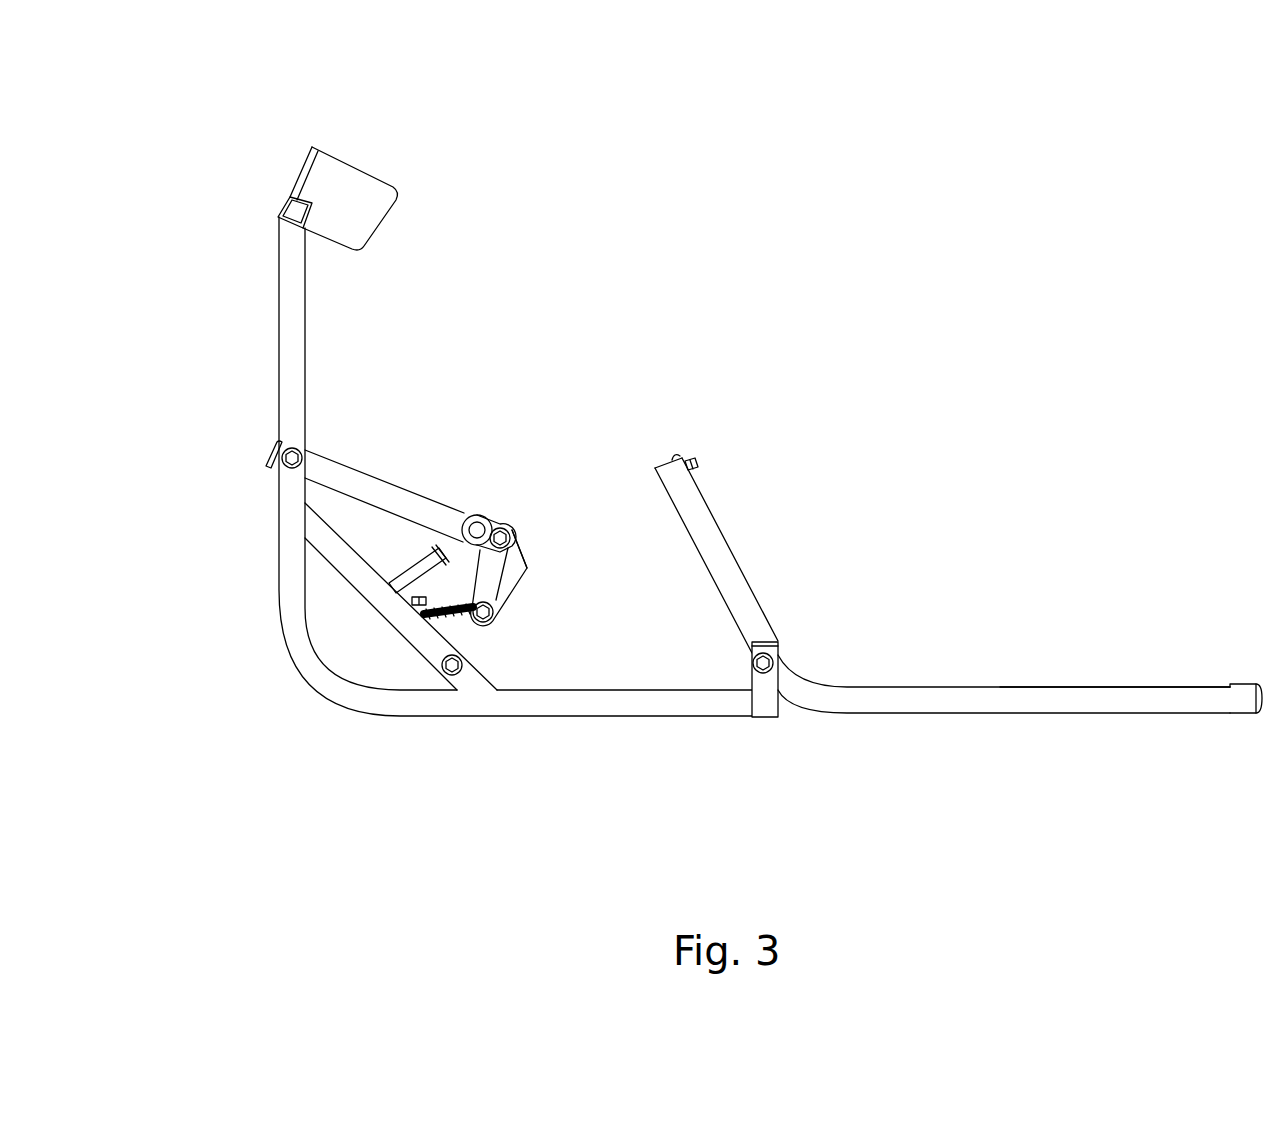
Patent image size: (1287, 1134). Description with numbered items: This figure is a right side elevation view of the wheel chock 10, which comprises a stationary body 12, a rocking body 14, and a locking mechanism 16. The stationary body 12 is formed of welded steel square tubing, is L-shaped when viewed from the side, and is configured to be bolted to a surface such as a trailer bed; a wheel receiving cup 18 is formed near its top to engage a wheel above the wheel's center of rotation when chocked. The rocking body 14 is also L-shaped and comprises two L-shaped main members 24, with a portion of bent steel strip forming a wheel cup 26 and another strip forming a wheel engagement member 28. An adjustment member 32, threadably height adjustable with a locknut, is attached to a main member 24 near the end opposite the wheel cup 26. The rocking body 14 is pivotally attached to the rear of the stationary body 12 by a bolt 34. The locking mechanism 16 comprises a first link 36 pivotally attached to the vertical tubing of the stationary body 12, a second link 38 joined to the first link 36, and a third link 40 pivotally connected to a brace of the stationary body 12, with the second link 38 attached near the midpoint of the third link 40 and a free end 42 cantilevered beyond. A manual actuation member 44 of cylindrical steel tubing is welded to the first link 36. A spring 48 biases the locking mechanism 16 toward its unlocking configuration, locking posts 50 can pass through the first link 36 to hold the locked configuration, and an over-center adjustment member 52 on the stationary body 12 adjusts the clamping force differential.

The wheel chock 10 is at (646, 172).
The stationary body 12 is at (295, 587).
The rocking body 14 is at (938, 695).
The locking mechanism 16 is at (332, 475).
The wheel receiving cup 18 is at (345, 178).
The main members 24 is at (1032, 697).
The wheel cup 26 is at (1242, 683).
The wheel engagement member 28 is at (677, 457).
The adjustment member 32 is at (697, 462).
The bolt 34 is at (758, 677).
The first link 36 is at (360, 490).
The second link 38 is at (490, 594).
The third link 40 is at (518, 573).
The free end 42 is at (519, 549).
The manual actuation member 44 is at (478, 518).
The spring 48 is at (435, 622).
The locking posts 50 is at (410, 562).
The over-center adjustment member 52 is at (408, 603).